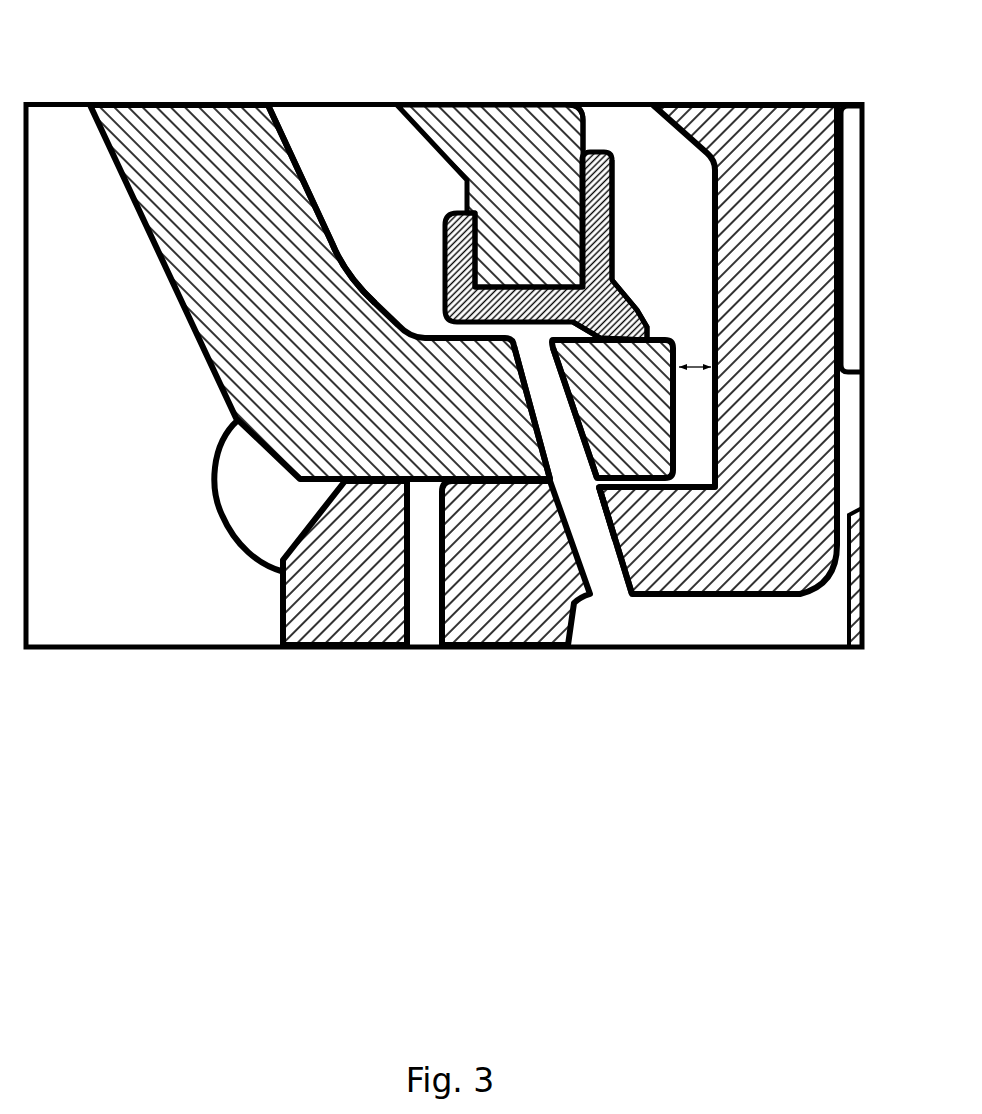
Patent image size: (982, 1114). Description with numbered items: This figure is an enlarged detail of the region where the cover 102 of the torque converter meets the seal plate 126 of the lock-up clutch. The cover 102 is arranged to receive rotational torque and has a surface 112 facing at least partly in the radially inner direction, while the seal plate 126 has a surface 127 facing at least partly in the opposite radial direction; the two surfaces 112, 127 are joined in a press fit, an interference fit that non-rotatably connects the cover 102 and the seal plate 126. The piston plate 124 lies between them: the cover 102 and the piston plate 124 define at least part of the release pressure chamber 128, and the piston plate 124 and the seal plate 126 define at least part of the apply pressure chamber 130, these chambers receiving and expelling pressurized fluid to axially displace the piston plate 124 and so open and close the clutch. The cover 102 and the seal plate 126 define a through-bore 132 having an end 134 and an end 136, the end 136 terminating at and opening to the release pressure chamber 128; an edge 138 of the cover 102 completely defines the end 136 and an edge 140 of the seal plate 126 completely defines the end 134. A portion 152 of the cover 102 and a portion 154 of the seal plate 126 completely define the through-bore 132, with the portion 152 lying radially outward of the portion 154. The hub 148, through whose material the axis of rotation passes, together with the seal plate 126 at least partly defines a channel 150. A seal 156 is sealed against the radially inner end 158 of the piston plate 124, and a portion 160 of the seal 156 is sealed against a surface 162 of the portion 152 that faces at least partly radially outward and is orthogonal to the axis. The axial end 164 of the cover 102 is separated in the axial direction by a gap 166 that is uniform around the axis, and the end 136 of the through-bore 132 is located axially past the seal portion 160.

The cover 102 is at (128, 204).
The surface 112 is at (492, 471).
The piston plate 124 is at (586, 120).
The seal plate 126 is at (850, 170).
The surface 127 is at (518, 484).
The release pressure chamber 128 is at (332, 130).
The apply pressure chamber 130 is at (630, 130).
The through-bore 132 is at (622, 533).
The end 134 is at (605, 585).
The end 136 is at (553, 267).
The edge 138 is at (510, 340).
The edge 140 is at (620, 563).
The hub 148 is at (313, 602).
The channel 150 is at (427, 578).
The portion 152 is at (640, 393).
The portion 154 is at (622, 567).
The seal 156 is at (718, 195).
The radially inner end 158 is at (525, 345).
The portion 160 is at (624, 235).
The surface 162 is at (620, 288).
The axial end 164 is at (678, 423).
The gap 166 is at (690, 363).